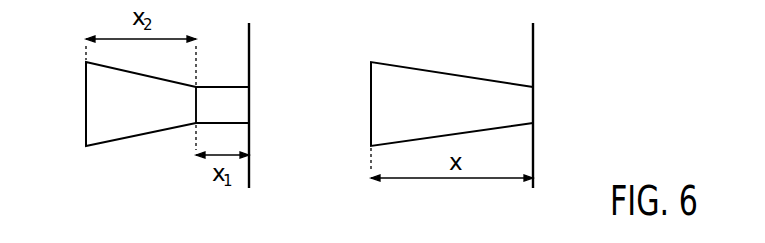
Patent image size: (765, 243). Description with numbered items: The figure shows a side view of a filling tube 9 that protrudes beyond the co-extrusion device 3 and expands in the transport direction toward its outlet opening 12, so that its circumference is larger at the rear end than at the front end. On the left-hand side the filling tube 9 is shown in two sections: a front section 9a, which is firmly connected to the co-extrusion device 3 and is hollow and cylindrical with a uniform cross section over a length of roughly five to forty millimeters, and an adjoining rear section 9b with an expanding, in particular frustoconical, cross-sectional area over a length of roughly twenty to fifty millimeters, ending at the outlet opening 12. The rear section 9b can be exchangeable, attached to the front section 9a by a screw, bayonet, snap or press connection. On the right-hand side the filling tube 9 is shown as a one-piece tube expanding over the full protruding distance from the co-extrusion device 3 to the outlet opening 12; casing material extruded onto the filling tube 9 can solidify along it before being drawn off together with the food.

The co-extrusion device 3 is at (252, 36).
The filling tube 9 is at (434, 71).
The front section 9a is at (220, 85).
The rear section 9b is at (123, 139).
The outlet opening 12 is at (84, 88).